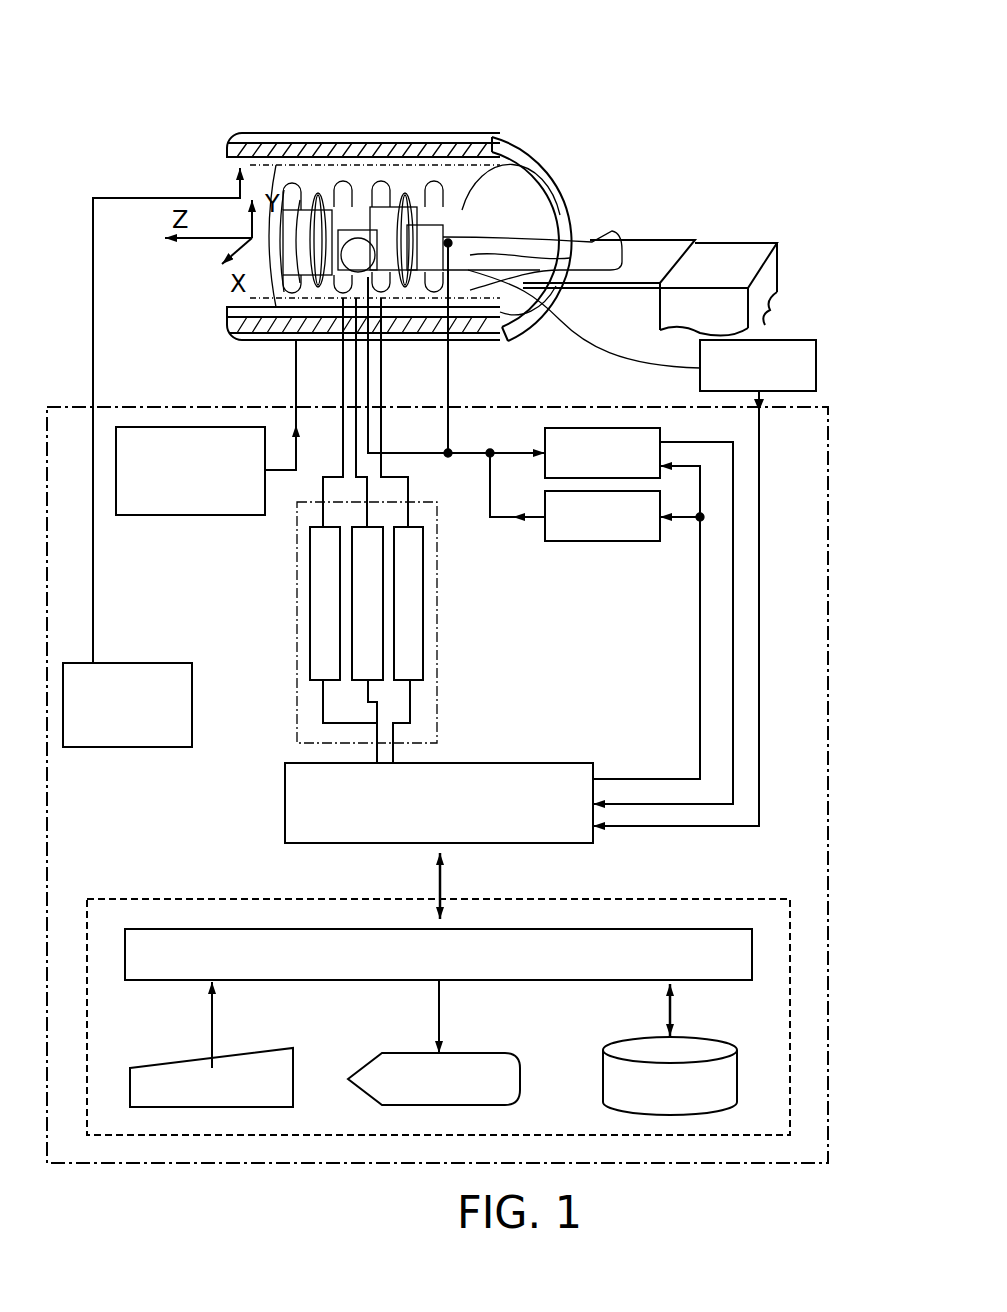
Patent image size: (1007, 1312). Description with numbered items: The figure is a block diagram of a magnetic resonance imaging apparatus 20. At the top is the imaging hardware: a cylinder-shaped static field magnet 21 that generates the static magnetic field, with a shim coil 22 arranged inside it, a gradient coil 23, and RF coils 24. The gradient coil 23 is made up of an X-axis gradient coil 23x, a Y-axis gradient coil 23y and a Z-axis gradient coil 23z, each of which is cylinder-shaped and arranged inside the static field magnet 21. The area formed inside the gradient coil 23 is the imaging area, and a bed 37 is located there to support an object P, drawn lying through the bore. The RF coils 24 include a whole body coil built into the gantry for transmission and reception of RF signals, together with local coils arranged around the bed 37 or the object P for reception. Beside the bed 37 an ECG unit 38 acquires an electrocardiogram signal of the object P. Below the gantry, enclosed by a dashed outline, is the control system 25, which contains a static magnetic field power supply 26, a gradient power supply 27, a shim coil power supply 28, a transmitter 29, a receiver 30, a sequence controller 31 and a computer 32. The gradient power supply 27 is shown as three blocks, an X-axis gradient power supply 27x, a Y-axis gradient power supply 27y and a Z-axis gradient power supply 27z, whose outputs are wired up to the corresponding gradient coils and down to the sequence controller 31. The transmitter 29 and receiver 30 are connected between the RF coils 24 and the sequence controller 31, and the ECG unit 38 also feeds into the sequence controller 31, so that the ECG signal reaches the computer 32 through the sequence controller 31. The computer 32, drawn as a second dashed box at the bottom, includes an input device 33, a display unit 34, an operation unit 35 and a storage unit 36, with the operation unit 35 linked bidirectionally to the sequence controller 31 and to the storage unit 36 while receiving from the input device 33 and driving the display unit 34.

The magnetic resonance imaging apparatus 20 is at (433, 587).
The static field magnet 21 is at (393, 210).
The shim coil 22 is at (536, 210).
The gradient coil 23 is at (381, 299).
The X-axis gradient coil 23x is at (397, 235).
The Y-axis gradient coil 23y is at (380, 235).
The Z-axis gradient coil 23z is at (336, 186).
The RF coils 24 is at (381, 235).
The control system 25 is at (433, 739).
The static magnetic field power supply 26 is at (206, 427).
The gradient power supply 27 is at (366, 530).
The X-axis gradient power supply 27x is at (287, 603).
The Y-axis gradient power supply 27y is at (308, 620).
The Z-axis gradient power supply 27z is at (447, 603).
The shim coil power supply 28 is at (151, 457).
The transmitter 29 is at (597, 616).
The receiver 30 is at (550, 523).
The sequence controller 31 is at (439, 811).
The computer 32 is at (438, 975).
The input device 33 is at (211, 1044).
The display unit 34 is at (434, 1042).
The operation unit 35 is at (438, 983).
The storage unit 36 is at (670, 1049).
The bed 37 is at (650, 244).
The ECG unit 38 is at (644, 548).
The object P is at (492, 212).